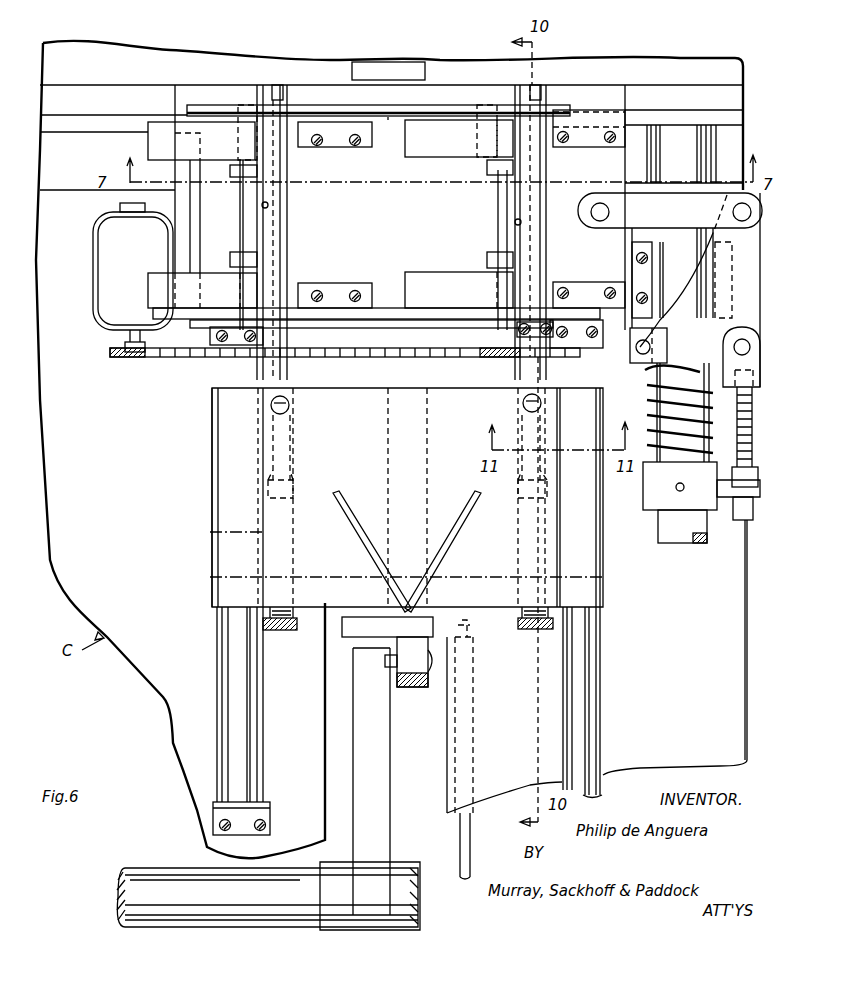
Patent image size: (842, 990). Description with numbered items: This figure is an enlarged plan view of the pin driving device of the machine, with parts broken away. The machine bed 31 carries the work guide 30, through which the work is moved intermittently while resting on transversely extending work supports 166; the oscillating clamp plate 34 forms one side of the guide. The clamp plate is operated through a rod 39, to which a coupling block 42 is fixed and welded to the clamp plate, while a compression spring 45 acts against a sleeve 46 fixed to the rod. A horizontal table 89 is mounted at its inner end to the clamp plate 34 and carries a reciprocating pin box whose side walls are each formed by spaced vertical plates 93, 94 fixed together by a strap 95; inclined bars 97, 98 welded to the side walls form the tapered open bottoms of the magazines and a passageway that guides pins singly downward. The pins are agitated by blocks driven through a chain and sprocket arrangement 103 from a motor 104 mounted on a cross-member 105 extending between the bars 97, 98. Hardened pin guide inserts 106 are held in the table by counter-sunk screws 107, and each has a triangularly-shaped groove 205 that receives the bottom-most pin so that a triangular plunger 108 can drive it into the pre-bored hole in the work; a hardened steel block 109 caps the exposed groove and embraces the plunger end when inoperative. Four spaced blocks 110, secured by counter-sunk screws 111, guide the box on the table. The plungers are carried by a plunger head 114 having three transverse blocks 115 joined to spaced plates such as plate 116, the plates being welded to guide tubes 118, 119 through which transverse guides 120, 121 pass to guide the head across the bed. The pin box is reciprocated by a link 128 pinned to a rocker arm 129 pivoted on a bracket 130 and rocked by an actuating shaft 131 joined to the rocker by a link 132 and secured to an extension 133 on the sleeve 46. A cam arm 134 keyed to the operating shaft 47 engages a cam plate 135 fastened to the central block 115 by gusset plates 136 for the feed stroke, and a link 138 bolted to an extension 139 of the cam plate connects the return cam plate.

The work guide 30 is at (436, 75).
The machine bed 31 is at (70, 468).
The clamp plate 34 is at (718, 95).
The rod 39 is at (690, 543).
The coupling block 42 is at (690, 155).
The compression spring 45 is at (700, 425).
The sleeve 46 is at (663, 492).
The operating shaft 47 is at (178, 890).
The horizontal table 89 is at (385, 128).
The side wall plate 93 is at (477, 112).
The side wall plate 94 is at (480, 314).
The strap 95 is at (398, 318).
The inclined bar 97 is at (437, 135).
The inclined bar 98 is at (435, 283).
The chain and sprocket arrangement 103 is at (362, 356).
The motor 104 is at (108, 268).
The cross-member 105 is at (192, 212).
The pin guide insert 106 is at (510, 205).
The counter-sunk screw 107 is at (517, 224).
The plunger 108 is at (520, 385).
The hardened steel block 109 is at (305, 340).
The guide block 110 is at (592, 120).
The counter-sunk screw 111 is at (612, 127).
The plunger head 114 is at (210, 485).
The block 115 is at (400, 458).
The plate 116 is at (320, 608).
The guide tube 118 is at (230, 440).
The guide tube 119 is at (585, 595).
The transverse guide 120 is at (240, 668).
The transverse guide 121 is at (590, 675).
The link 128 is at (670, 219).
The rocker arm 129 is at (745, 270).
The bracket 130 is at (640, 363).
The actuating shaft 131 is at (750, 435).
The link 132 is at (760, 370).
The extension 133 is at (730, 505).
The cam arm 134 is at (385, 800).
The cam plate 135 is at (340, 632).
The gusset plate 136 is at (455, 548).
The link 138 is at (462, 816).
The extension 139 is at (475, 642).
The work support 166 is at (372, 72).
The triangularly-shaped groove 205 is at (535, 85).